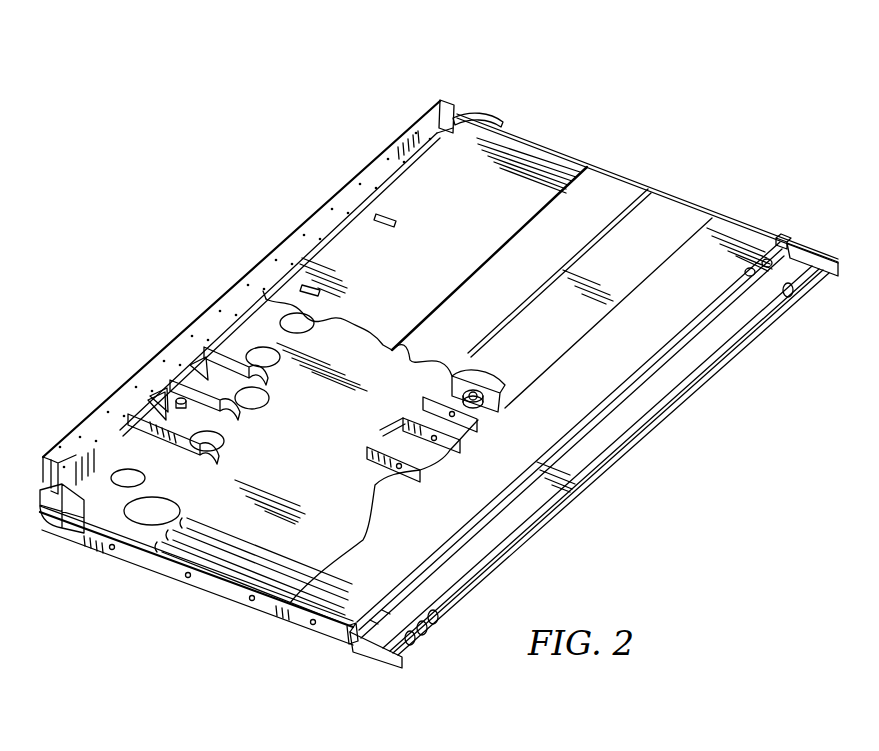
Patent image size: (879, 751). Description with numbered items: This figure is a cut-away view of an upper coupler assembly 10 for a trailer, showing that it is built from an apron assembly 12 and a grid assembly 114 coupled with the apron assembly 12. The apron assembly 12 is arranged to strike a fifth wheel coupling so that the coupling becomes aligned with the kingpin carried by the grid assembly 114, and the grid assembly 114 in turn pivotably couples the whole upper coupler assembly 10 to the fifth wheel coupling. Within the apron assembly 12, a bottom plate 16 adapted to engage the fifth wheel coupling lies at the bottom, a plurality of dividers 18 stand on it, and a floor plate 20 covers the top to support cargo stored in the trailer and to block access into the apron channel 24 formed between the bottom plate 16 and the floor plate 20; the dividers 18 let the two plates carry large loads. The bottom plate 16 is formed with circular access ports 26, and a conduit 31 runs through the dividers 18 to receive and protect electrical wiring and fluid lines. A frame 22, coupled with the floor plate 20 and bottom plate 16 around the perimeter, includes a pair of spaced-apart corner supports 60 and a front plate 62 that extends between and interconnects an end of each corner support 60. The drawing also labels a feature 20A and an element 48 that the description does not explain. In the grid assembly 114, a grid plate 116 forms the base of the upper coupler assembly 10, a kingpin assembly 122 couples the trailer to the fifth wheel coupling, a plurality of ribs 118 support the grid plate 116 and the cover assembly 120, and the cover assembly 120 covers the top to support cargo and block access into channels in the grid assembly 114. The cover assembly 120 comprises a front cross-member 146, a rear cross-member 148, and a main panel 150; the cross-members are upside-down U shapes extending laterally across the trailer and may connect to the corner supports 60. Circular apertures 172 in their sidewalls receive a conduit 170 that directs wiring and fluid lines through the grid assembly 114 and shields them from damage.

The upper coupler assembly 10 is at (183, 130).
The apron assembly 12 is at (562, 134).
The bottom plate 16 is at (106, 512).
The dividers 18 is at (224, 342).
The floor plate 20 is at (348, 259).
The raised rear panel 20A is at (383, 216).
The frame 22 is at (103, 396).
The apron channel 24 is at (262, 345).
The access ports 26 is at (157, 520).
The conduit 31 is at (268, 400).
The clip 48 is at (320, 291).
The corner supports 60 is at (627, 172).
The front plate 62 is at (70, 447).
The grid assembly 114 is at (685, 191).
The grid plate 116 is at (337, 527).
The ribs 118 is at (413, 426).
The cover assembly 120 is at (678, 229).
The kingpin assembly 122 is at (477, 393).
The front cross-member 146 is at (563, 237).
The rear cross-member 148 is at (618, 347).
The main panel 150 is at (600, 277).
The conduit 170 is at (247, 577).
The apertures 172 is at (362, 643).